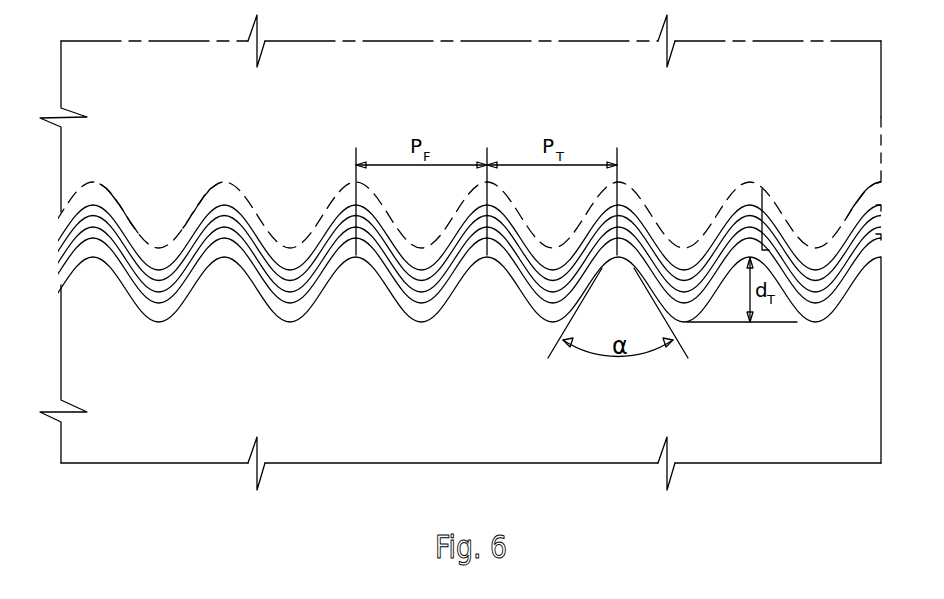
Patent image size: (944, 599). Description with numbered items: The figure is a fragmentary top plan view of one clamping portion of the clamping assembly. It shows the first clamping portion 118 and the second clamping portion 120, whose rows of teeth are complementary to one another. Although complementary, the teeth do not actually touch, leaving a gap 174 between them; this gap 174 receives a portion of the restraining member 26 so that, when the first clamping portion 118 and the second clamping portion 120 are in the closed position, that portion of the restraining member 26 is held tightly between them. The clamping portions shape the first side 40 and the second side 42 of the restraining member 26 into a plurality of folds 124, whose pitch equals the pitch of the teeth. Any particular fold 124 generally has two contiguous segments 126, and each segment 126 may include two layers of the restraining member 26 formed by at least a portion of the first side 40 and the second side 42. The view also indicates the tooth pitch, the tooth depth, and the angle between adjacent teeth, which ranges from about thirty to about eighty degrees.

The first clamping portion 118 is at (486, 100).
The second clamping portion 120 is at (486, 437).
The fold 124 is at (224, 184).
The segment 126 is at (215, 297).
The gap 174 is at (764, 220).
The first side 40 is at (881, 186).
The restraining member 26 is at (899, 217).
The second side 42 is at (882, 240).